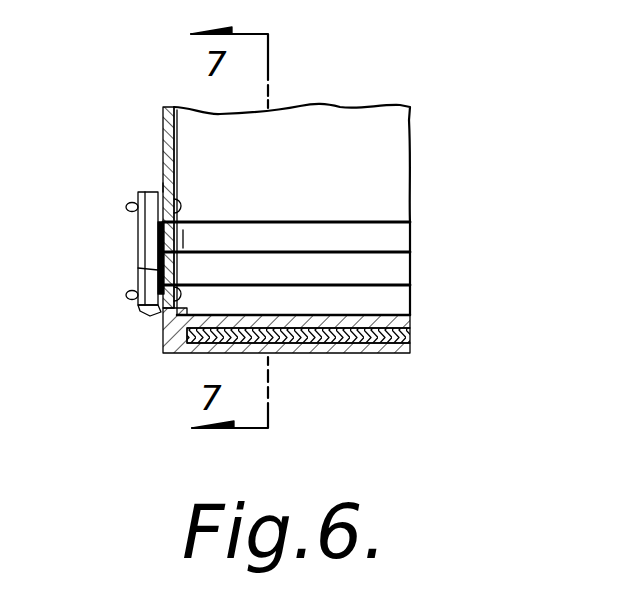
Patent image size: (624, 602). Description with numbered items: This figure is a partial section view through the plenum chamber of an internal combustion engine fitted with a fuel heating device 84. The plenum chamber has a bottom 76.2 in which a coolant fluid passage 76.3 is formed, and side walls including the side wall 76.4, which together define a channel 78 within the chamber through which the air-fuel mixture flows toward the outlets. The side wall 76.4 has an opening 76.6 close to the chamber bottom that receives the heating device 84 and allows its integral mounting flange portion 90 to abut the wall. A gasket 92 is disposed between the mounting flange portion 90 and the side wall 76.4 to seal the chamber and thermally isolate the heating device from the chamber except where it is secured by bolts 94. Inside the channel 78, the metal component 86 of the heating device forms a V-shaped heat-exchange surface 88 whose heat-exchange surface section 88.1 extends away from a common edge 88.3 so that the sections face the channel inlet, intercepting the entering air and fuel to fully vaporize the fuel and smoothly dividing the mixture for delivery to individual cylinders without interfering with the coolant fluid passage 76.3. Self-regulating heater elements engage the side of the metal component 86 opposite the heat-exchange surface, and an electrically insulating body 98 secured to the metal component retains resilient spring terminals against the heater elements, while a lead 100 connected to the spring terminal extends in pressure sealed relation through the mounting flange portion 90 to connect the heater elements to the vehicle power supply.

The channel 78 is at (378, 170).
The bottom 76.2 is at (365, 353).
The coolant fluid passage 76.3 is at (412, 336).
The side wall 76.4 is at (163, 130).
The opening 76.6 is at (163, 272).
The heating device 84 is at (132, 221).
The metal component 86 is at (243, 221).
The V-shaped heat-exchange surface 88 is at (192, 240).
The heat-exchange surface section 88.1 is at (387, 238).
The common edge 88.3 is at (399, 222).
The mounting flange portion 90 is at (148, 309).
The gasket 92 is at (160, 186).
The bolts 94 is at (129, 203).
The electrically insulating body 98 is at (392, 267).
The lead 100 is at (138, 270).